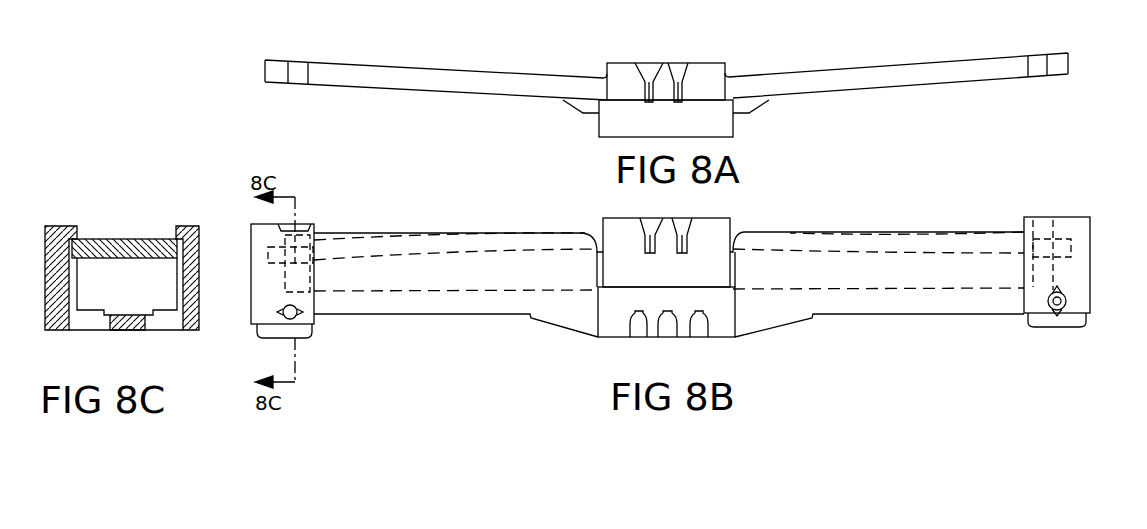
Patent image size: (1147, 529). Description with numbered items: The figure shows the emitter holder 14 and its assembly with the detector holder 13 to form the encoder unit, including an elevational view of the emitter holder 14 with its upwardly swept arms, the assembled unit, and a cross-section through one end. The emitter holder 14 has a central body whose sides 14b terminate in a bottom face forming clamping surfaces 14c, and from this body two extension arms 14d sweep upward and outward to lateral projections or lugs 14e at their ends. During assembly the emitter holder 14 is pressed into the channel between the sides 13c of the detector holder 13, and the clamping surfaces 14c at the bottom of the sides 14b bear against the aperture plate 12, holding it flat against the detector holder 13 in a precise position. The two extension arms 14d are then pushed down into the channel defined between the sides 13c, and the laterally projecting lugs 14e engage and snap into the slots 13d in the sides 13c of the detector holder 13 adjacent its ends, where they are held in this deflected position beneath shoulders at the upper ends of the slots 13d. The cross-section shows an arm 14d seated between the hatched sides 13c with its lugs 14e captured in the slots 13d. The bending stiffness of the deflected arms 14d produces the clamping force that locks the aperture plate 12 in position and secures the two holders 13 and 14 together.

In FIG. 8B, the aperture plate 12 is at (706, 285).
In FIG. 8B, the detector holder 13 is at (696, 265).
In FIG. 8C, the detector holder 13 is at (100, 240).
In FIG. 8C, the sides of the detector holder 13c is at (53, 226).
In FIG. 8B, the slots 13d is at (1053, 228).
In FIG. 8C, the slots 13d is at (177, 296).
In FIG. 8A, the emitter holder 14 is at (679, 88).
In FIG. 8B, the emitter holder 14 is at (669, 263).
In FIG. 8B, the sides of the emitter holder 14b is at (612, 220).
In FIG. 8A, the bottom face / clamping surfaces 14c is at (725, 125).
In FIG. 8A, the extension arms 14d is at (438, 70).
In FIG. 8B, the extension arms 14d is at (937, 232).
In FIG. 8C, the extension arms 14d is at (117, 239).
In FIG. 8A, the lateral projections / lugs 14e is at (300, 63).
In FIG. 8B, the lateral projections / lugs 14e is at (1075, 251).
In FIG. 8C, the lateral projections / lugs 14e is at (177, 265).